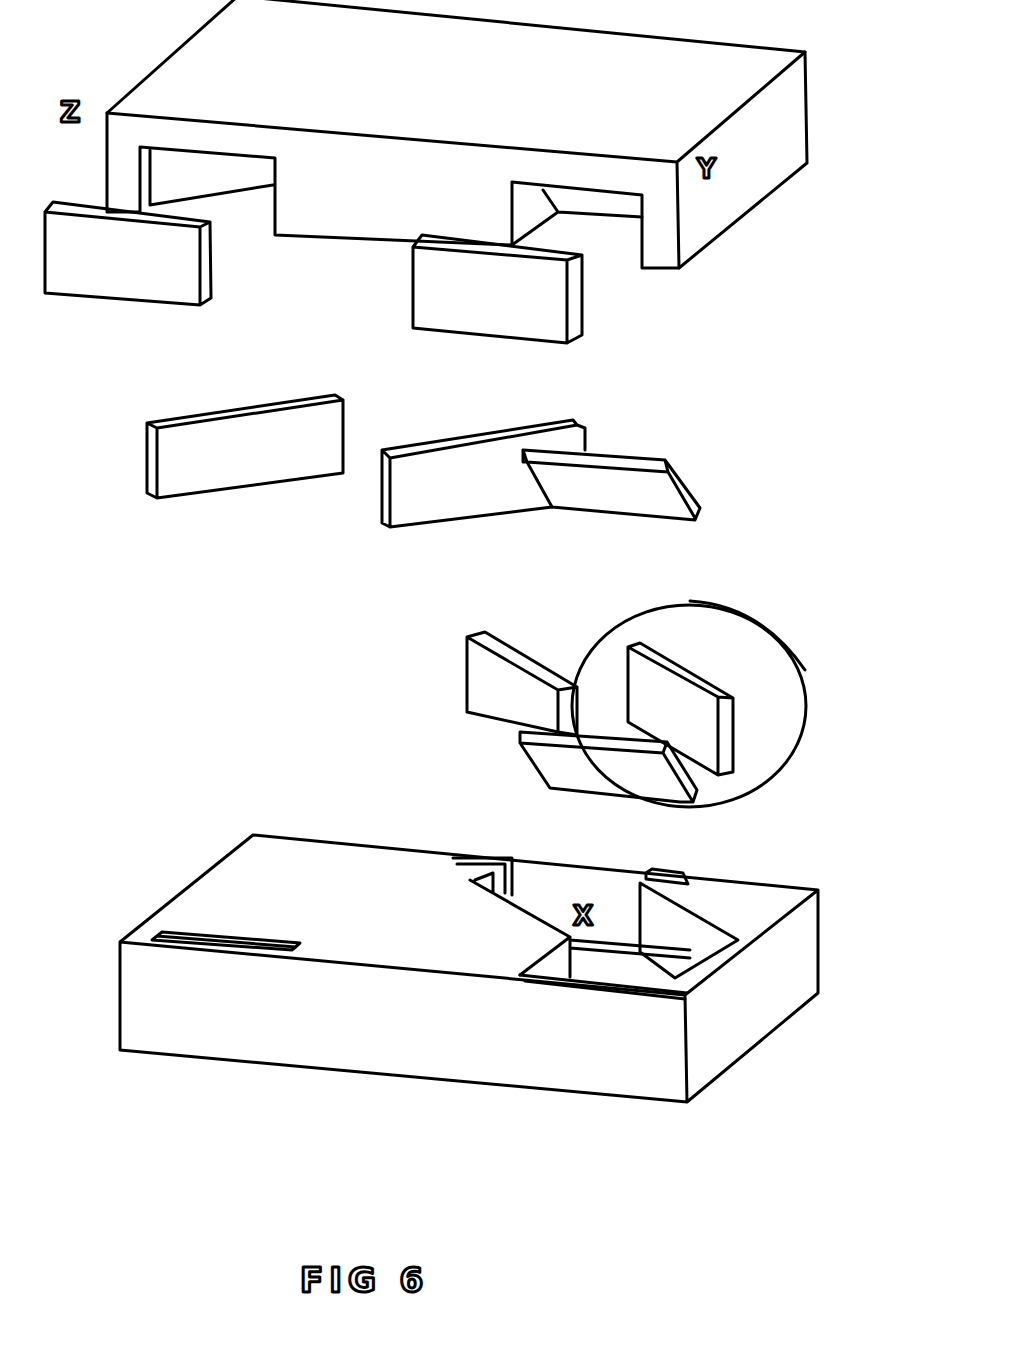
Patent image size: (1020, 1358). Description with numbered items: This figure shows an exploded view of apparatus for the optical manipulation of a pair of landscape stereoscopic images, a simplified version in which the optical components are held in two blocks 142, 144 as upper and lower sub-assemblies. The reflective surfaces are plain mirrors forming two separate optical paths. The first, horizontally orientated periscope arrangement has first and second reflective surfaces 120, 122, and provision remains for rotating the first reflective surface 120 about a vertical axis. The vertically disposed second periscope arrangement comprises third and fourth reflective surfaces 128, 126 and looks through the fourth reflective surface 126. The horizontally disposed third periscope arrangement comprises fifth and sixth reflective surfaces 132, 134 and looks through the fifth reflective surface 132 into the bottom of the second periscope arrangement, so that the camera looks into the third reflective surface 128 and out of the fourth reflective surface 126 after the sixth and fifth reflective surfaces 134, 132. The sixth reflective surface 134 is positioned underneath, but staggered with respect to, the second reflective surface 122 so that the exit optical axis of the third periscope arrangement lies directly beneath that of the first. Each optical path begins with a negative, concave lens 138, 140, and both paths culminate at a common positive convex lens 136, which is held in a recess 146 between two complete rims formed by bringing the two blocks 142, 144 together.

The first reflective surface 120 is at (217, 182).
The second reflective surface 122 is at (442, 500).
The fourth reflective surface 126 is at (628, 208).
The third reflective surface 128 is at (613, 772).
The fifth reflective surface 132 is at (682, 700).
The sixth reflective surface 134 is at (502, 730).
The positive lens 136 is at (773, 684).
The negative lens 138 is at (512, 318).
The negative lens 140 is at (143, 280).
The block 142 is at (712, 62).
The block 144 is at (660, 1085).
The recess 146 is at (190, 935).